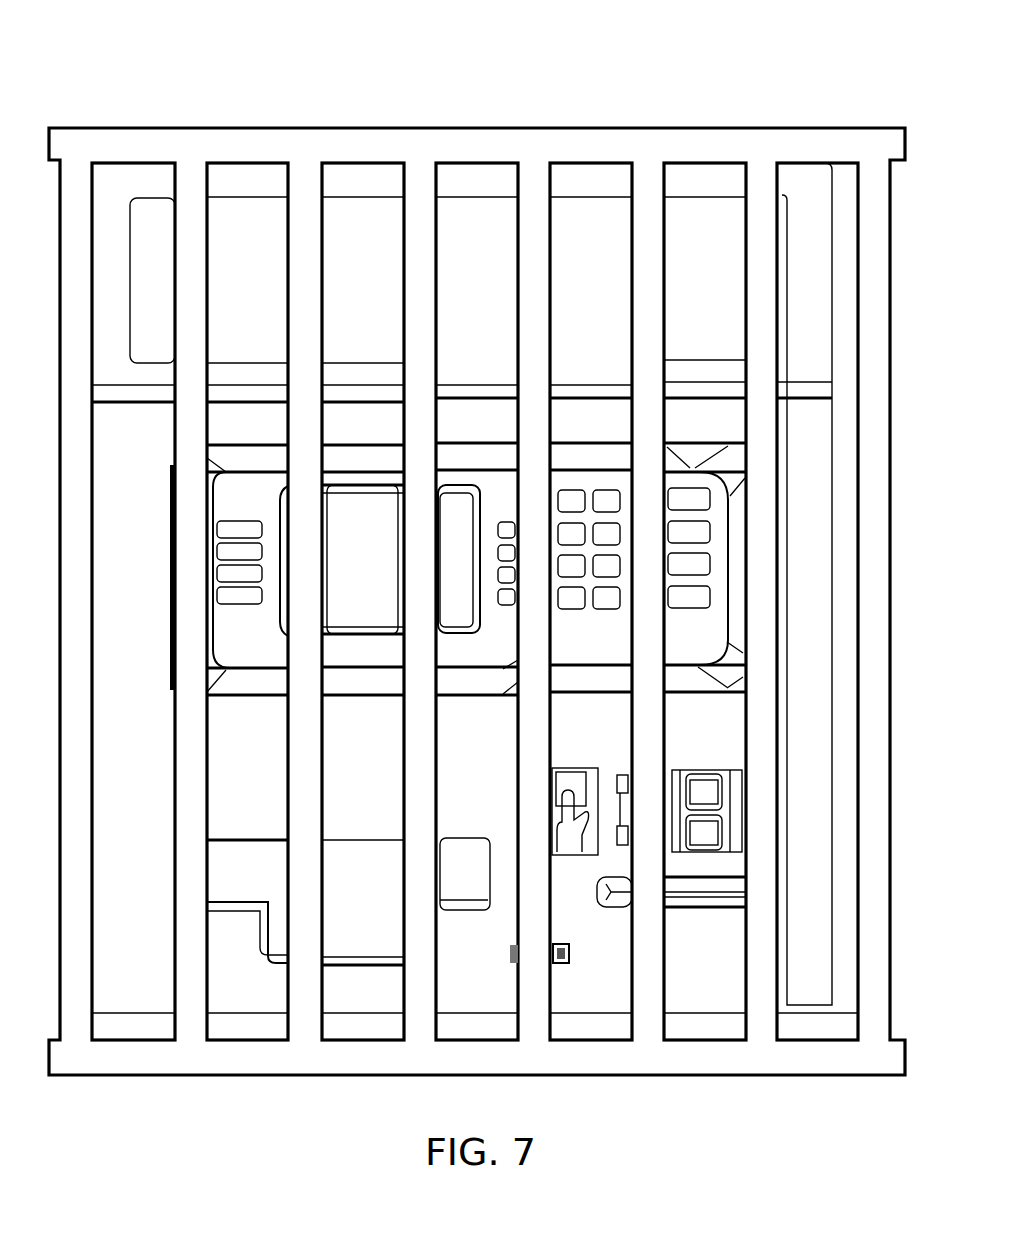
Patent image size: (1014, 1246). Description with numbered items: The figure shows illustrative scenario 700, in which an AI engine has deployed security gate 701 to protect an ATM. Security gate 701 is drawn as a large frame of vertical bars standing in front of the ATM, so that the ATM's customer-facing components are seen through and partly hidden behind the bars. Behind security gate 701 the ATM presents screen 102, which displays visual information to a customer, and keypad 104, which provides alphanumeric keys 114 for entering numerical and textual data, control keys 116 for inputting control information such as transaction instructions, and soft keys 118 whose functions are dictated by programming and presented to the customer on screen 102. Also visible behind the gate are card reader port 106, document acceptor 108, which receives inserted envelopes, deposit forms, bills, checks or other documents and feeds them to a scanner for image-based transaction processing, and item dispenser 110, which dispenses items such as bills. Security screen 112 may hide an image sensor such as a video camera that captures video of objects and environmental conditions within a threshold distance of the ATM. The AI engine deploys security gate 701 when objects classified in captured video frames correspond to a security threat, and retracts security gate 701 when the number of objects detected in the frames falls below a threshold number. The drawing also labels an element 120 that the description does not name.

The scenario 700 is at (108, 46).
The security gate 701 is at (642, 127).
The screen 102 is at (470, 522).
The keypad 104 is at (513, 670).
The card reader port 106 is at (742, 768).
The document acceptor 108 is at (805, 584).
The item dispenser 110 is at (232, 840).
The security screen 112 is at (243, 510).
The alphanumeric keys 114 is at (568, 612).
The control keys 116 is at (690, 482).
The soft keys 118 is at (549, 466).
The sensor module 120 is at (556, 965).